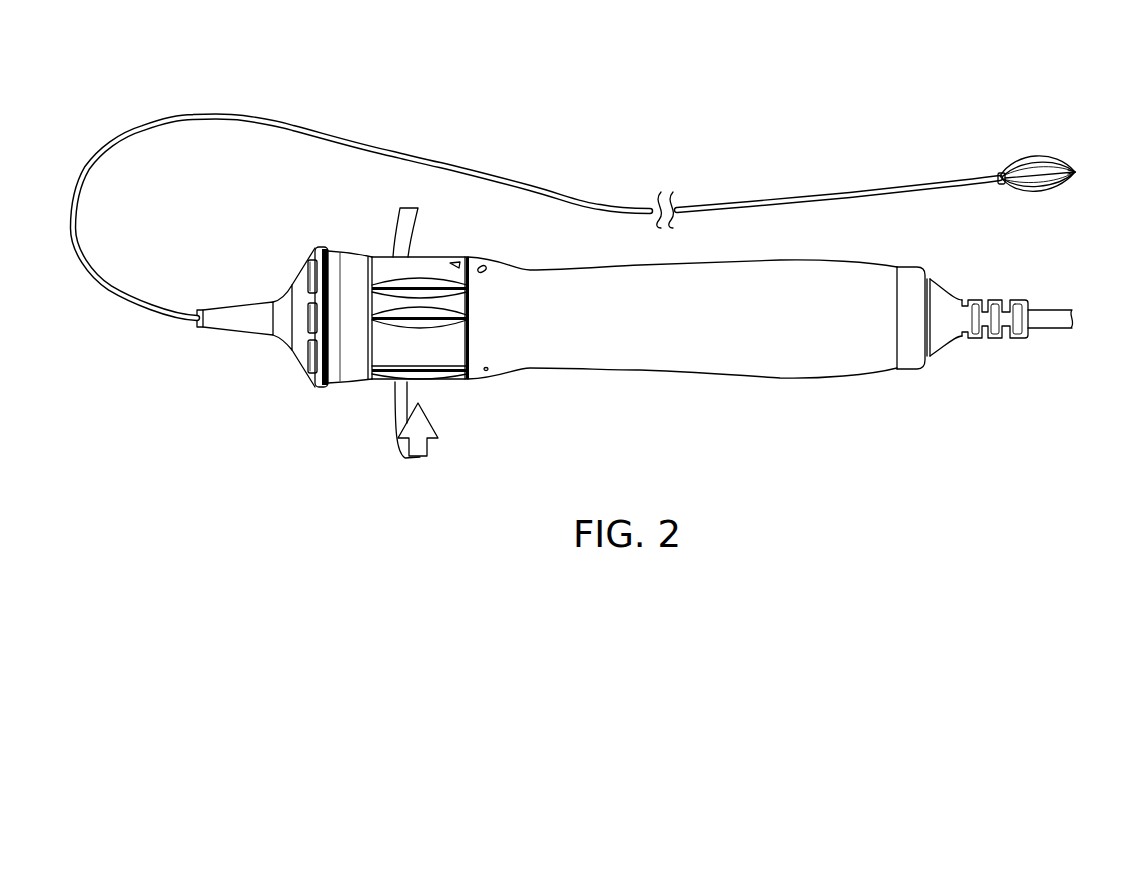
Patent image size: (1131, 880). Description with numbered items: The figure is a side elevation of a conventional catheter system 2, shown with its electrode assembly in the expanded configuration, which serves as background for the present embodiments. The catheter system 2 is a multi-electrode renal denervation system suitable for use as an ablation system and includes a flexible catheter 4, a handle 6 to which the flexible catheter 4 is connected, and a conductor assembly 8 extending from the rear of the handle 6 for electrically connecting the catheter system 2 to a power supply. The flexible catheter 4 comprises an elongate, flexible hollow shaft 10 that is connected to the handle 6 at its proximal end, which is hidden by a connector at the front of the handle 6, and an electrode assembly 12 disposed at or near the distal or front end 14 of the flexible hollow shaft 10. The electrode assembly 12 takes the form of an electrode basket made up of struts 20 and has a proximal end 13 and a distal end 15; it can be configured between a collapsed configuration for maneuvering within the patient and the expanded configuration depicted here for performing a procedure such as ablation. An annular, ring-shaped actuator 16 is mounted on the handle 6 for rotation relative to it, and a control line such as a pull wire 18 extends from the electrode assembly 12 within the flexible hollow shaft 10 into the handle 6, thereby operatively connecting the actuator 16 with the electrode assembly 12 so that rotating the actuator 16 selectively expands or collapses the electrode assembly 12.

The catheter system 2 is at (683, 90).
The flexible catheter 4 is at (360, 110).
The handle 6 is at (770, 397).
The conductor assembly 8 is at (1045, 357).
The flexible hollow shaft 10 is at (443, 163).
The electrode assembly 12 is at (1065, 142).
The proximal end 13 is at (989, 160).
The distal end 14 is at (989, 205).
The distal end 15 is at (1085, 152).
The actuator 16 is at (450, 380).
The pull wire 18 is at (1010, 187).
The struts 20 is at (1027, 160).